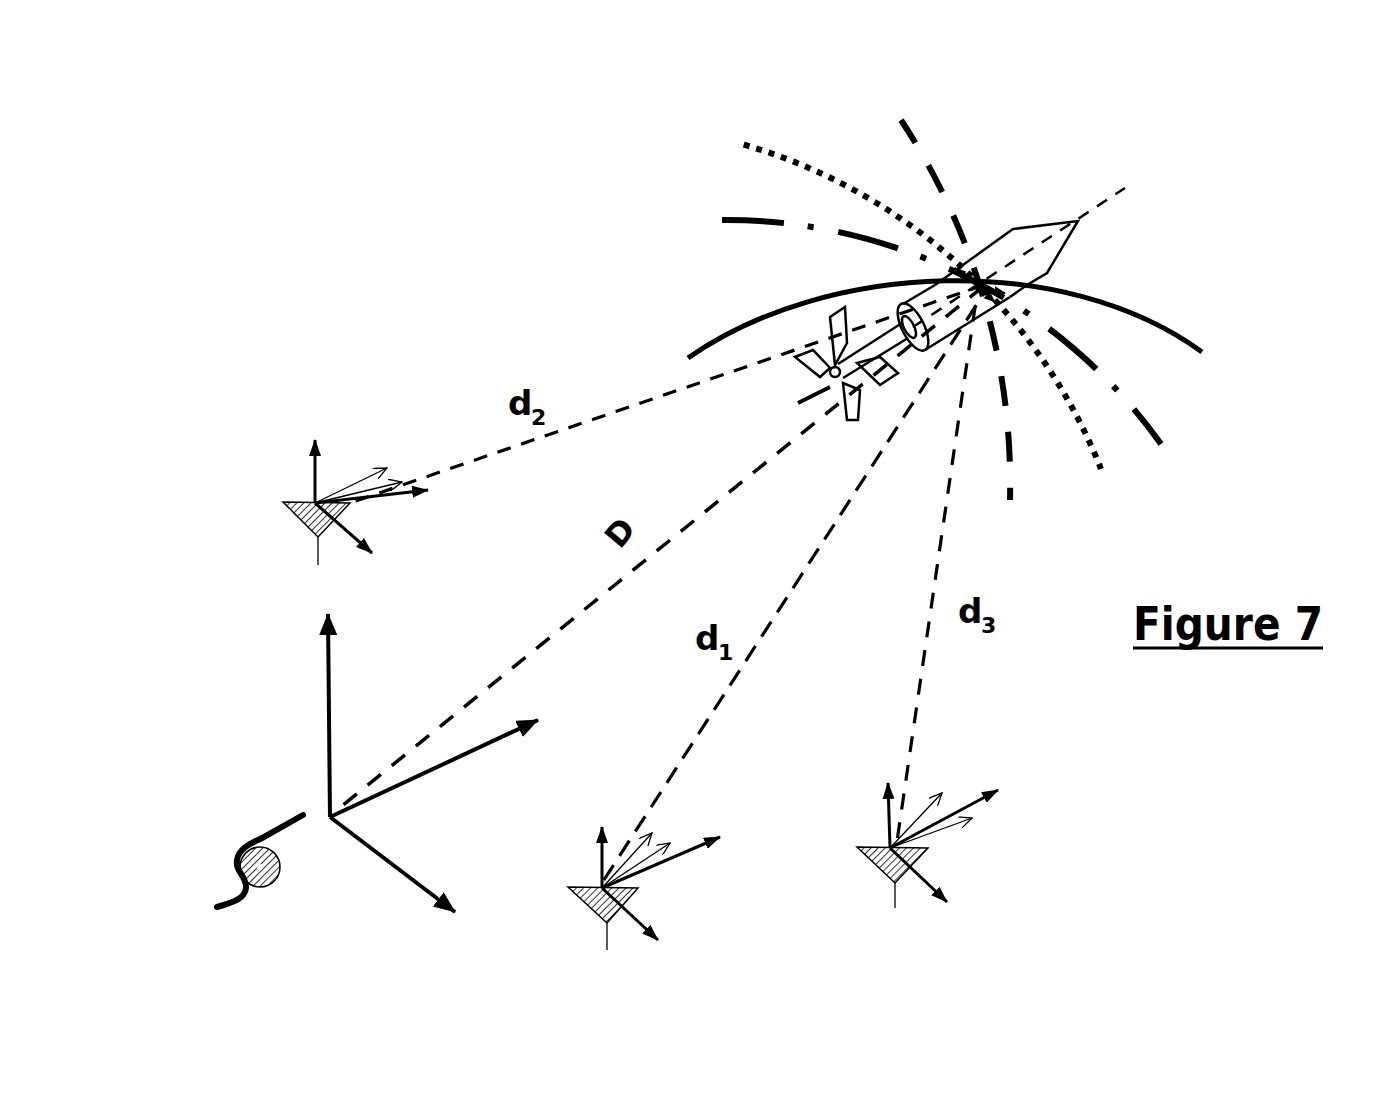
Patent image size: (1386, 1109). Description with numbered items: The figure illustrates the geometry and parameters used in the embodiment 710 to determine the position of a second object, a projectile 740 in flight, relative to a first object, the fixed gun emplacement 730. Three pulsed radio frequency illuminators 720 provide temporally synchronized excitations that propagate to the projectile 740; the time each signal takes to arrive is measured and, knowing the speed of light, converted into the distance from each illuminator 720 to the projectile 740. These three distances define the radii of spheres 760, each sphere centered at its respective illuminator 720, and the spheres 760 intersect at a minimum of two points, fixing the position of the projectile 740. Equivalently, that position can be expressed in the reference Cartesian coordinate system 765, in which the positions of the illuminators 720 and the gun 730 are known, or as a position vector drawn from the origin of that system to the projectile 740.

The embodiment 710 is at (342, 171).
The illuminator 720 is at (342, 460).
The gun 730 is at (235, 838).
The projectile 740 is at (1049, 210).
The sphere 760 is at (1138, 367).
The reference coordinate frame 765 is at (310, 697).